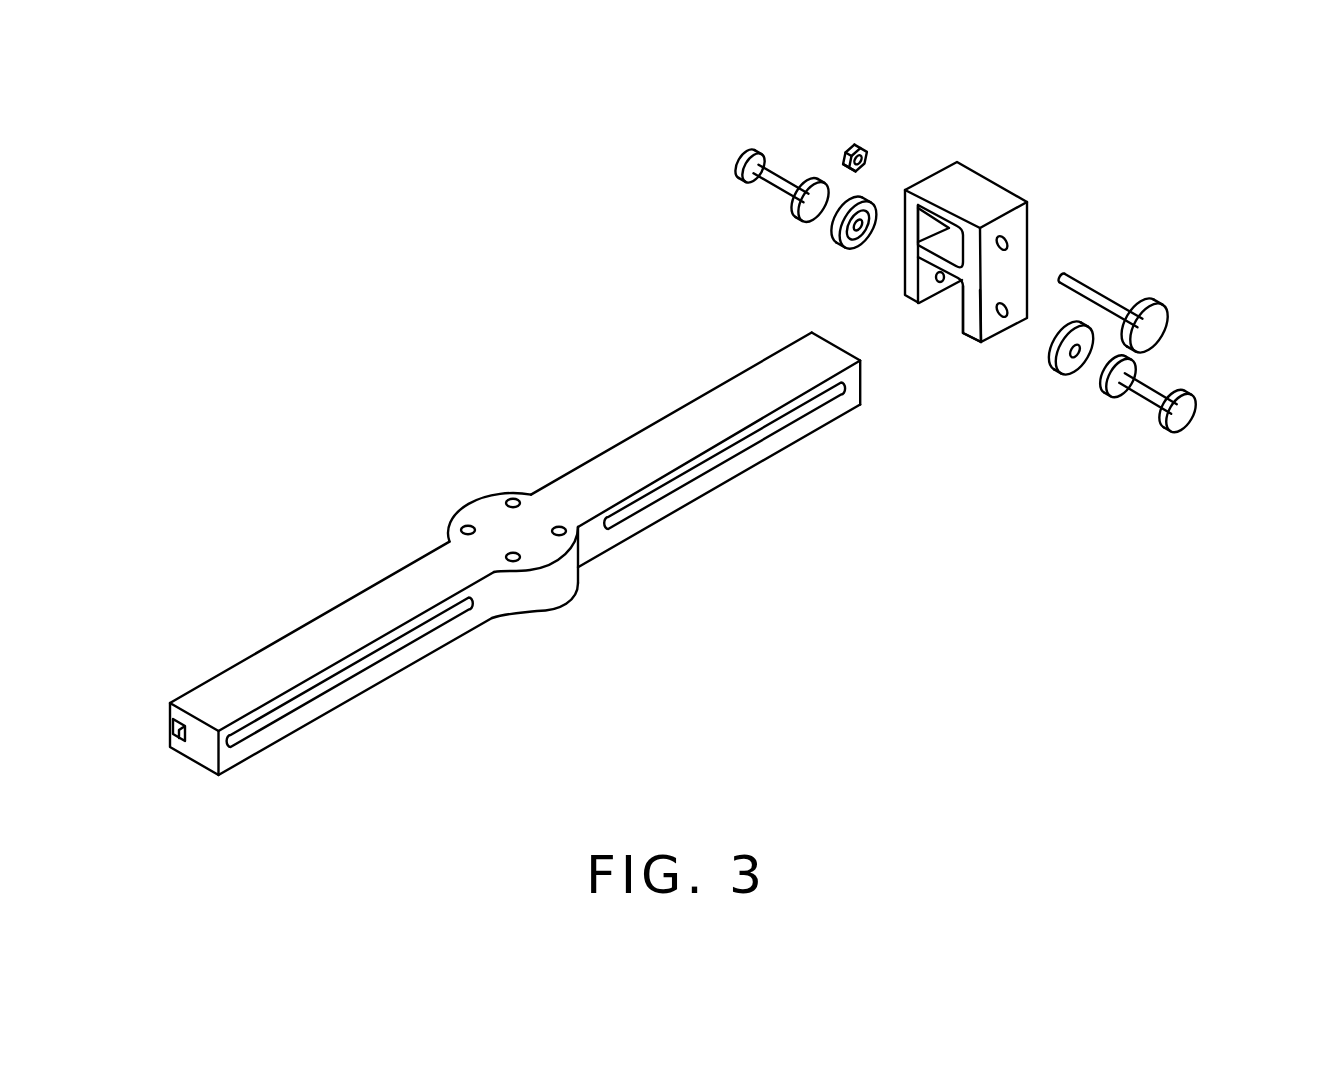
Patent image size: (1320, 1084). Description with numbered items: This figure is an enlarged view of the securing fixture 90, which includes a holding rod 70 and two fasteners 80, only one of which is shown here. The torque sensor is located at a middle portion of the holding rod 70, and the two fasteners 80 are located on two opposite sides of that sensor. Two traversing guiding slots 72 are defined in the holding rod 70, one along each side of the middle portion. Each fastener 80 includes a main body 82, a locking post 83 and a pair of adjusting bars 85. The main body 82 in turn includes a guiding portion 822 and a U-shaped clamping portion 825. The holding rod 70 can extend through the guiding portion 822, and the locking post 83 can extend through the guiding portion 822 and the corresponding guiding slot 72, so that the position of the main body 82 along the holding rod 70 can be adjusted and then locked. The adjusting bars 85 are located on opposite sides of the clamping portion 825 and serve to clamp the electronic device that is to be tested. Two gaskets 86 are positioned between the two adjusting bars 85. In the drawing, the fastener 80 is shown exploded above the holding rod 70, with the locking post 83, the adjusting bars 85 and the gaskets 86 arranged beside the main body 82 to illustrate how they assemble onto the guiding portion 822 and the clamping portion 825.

The securing fixture 90 is at (417, 256).
The holding rod 70 is at (415, 590).
The guiding slot 72 is at (728, 455).
The fastener 80 is at (1062, 181).
The main body 82 is at (950, 195).
The guiding portion 822 is at (940, 245).
The clamping portion 825 is at (957, 307).
The locking post 83 is at (1090, 290).
The adjusting bar 85 is at (1152, 393).
The gasket 86 is at (1073, 367).